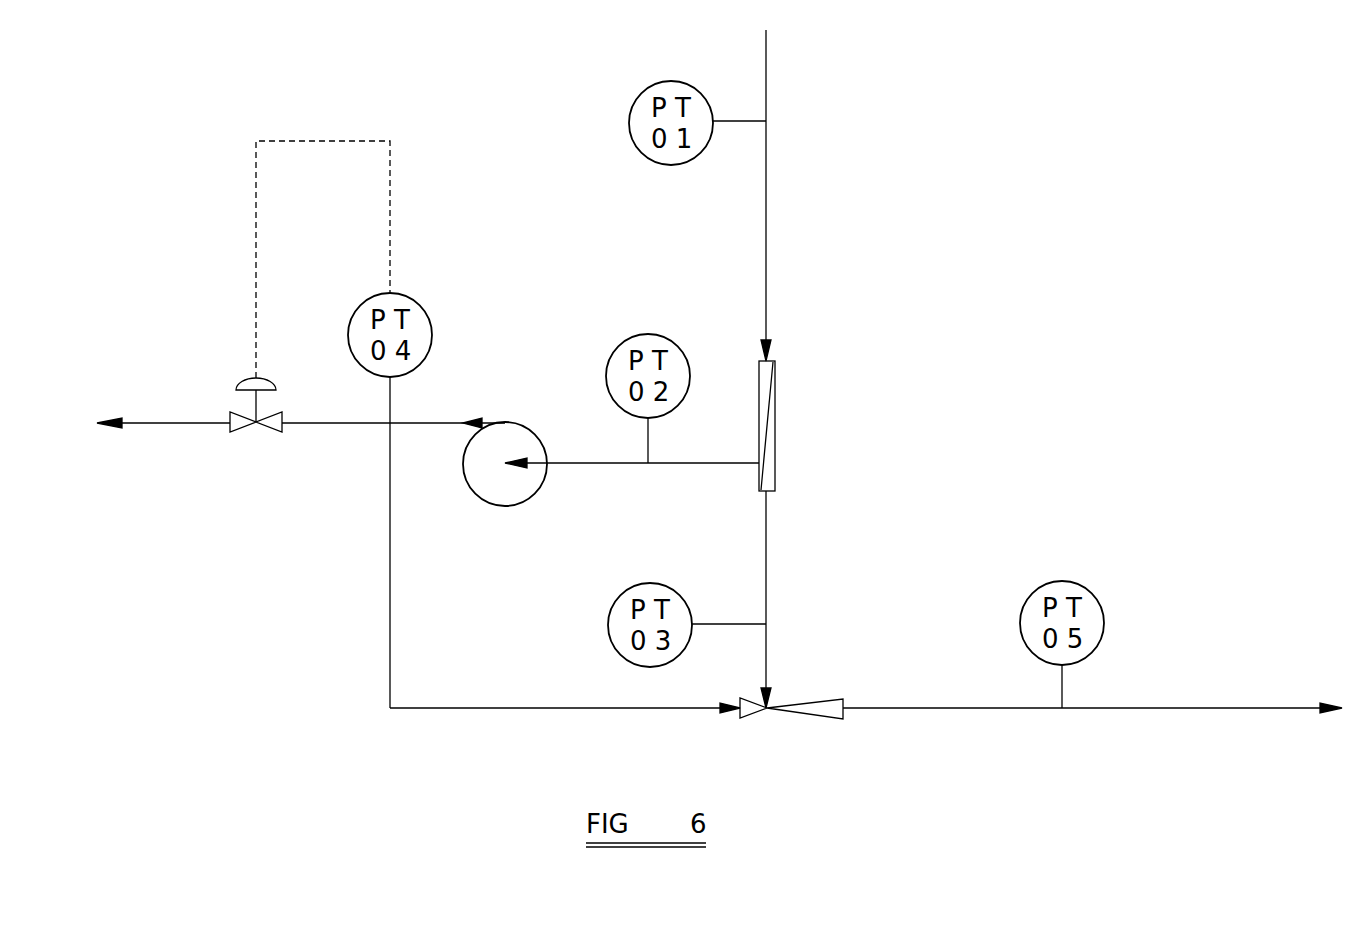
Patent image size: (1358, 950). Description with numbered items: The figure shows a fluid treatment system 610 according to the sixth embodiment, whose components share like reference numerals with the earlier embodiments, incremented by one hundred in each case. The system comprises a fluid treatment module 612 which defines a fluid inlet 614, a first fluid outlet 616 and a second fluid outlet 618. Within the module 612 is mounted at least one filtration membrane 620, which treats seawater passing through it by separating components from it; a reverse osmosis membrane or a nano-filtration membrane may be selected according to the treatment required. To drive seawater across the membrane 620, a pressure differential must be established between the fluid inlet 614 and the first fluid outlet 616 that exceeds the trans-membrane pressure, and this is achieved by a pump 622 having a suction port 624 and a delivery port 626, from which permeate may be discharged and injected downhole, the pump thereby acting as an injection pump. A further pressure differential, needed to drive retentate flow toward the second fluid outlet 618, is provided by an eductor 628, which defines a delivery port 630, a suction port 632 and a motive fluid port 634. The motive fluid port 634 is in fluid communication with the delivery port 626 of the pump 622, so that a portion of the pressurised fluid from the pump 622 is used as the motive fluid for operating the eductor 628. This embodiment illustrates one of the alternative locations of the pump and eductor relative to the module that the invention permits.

The fluid treatment system 610 is at (1027, 362).
The fluid treatment module 612 is at (758, 368).
The fluid inlet 614 is at (771, 359).
The first fluid outlet 616 is at (767, 493).
The second fluid outlet 618 is at (758, 465).
The filtration membrane 620 is at (767, 432).
The pump 622 is at (517, 423).
The suction port 624 is at (547, 455).
The delivery port 626 is at (470, 422).
The eductor 628 is at (807, 714).
The delivery port 630 is at (846, 708).
The suction port 632 is at (770, 707).
The motive fluid port 634 is at (744, 712).